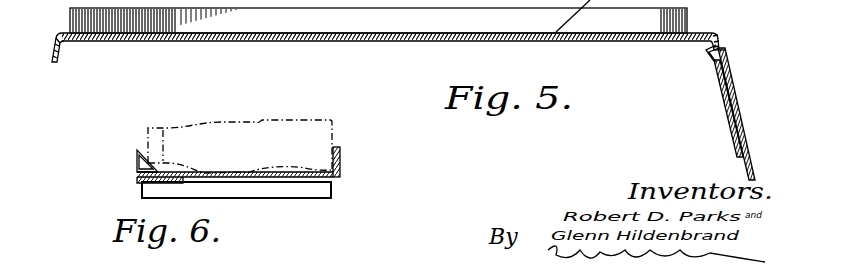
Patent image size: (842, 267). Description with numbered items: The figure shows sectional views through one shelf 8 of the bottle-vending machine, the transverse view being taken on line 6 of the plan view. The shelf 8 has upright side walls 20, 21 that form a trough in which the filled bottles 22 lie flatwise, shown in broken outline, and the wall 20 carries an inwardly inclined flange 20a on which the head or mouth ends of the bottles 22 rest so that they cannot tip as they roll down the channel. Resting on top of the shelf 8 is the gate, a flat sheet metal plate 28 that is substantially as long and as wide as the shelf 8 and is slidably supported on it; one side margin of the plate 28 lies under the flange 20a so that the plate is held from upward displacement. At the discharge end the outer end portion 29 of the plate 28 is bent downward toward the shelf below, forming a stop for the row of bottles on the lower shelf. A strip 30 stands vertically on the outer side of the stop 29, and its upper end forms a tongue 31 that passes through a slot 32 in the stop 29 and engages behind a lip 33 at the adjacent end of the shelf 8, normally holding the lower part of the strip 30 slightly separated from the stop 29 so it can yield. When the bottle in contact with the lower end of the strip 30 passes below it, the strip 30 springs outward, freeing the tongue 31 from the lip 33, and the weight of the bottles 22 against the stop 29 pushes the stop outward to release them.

In FIG. 5, the shelf 8 is at (193, 41).
In FIG. 5, the lip 33 is at (719, 46).
In FIG. 5, the outer end portion 29 is at (724, 54).
In FIG. 5, the tongue 31 is at (710, 53).
In FIG. 5, the slot 32 is at (725, 61).
In FIG. 5, the strip 30 is at (738, 112).
In FIG. 6, the line 6— 6 is at (312, 182).
In FIG. 6, the flat sheet metal plate 28 is at (245, 160).
In FIG. 6, the side wall 21 is at (342, 156).
In FIG. 6, the side wall 20 is at (140, 168).
In FIG. 6, the inwardly inclined flange 20a is at (138, 181).
In FIG. 6, the filled bottles 22 is at (260, 120).